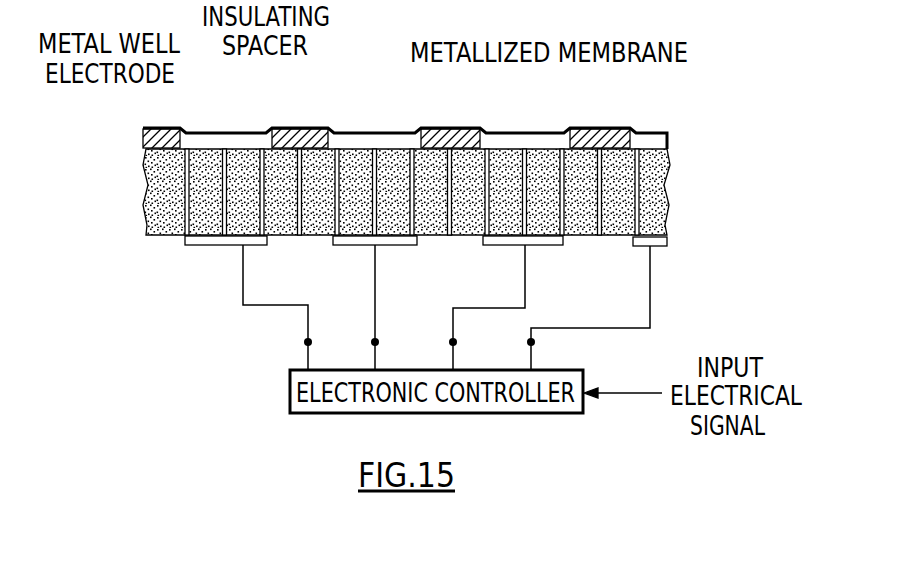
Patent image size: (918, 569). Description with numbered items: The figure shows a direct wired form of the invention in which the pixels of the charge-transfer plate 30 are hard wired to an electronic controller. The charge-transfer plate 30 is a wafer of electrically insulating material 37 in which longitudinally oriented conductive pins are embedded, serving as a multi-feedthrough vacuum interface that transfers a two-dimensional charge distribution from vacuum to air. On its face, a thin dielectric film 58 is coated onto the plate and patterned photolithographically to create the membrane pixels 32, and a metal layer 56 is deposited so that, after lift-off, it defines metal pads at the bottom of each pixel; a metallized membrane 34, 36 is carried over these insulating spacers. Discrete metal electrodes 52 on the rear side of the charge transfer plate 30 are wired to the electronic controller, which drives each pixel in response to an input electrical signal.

The charge-transfer plate 30 is at (422, 184).
The membrane pixels 32 is at (405, 109).
The membrane metallization layer 34 is at (405, 109).
The membrane metallization layer 36 is at (347, 130).
The electrically insulating material 37 is at (580, 228).
The bottom electrode 52 is at (202, 242).
The metal layer 56 is at (223, 133).
The thin dielectric film 58 is at (283, 133).